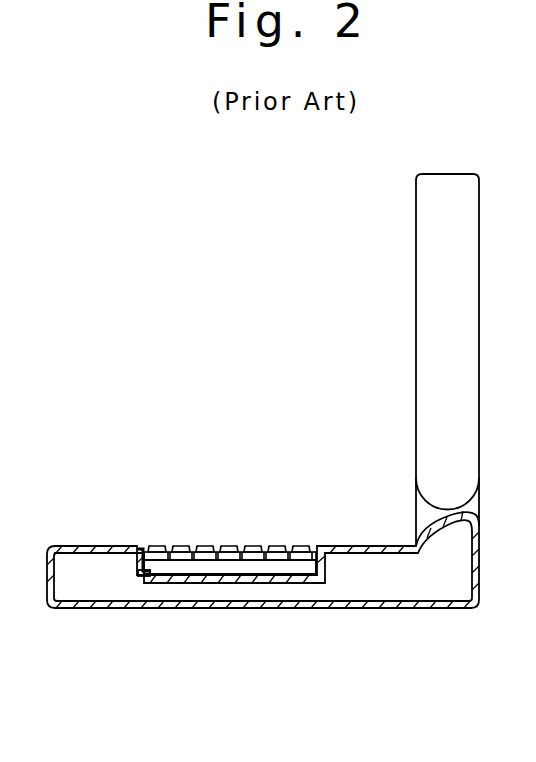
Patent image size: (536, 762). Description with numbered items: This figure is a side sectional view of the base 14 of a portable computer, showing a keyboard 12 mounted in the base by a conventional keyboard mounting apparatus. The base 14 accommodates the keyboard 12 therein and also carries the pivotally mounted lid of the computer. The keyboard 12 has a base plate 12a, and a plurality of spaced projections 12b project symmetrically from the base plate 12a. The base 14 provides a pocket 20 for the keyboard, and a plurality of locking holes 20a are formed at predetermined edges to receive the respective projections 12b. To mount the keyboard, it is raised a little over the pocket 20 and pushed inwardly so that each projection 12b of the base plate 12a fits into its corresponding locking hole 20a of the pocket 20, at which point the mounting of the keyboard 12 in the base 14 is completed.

The base 14 is at (93, 546).
The keyboard 12 is at (224, 557).
The base plate 12a is at (147, 580).
The projections 12b is at (198, 567).
The pocket 20 is at (105, 534).
The locking holes 20a is at (137, 571).